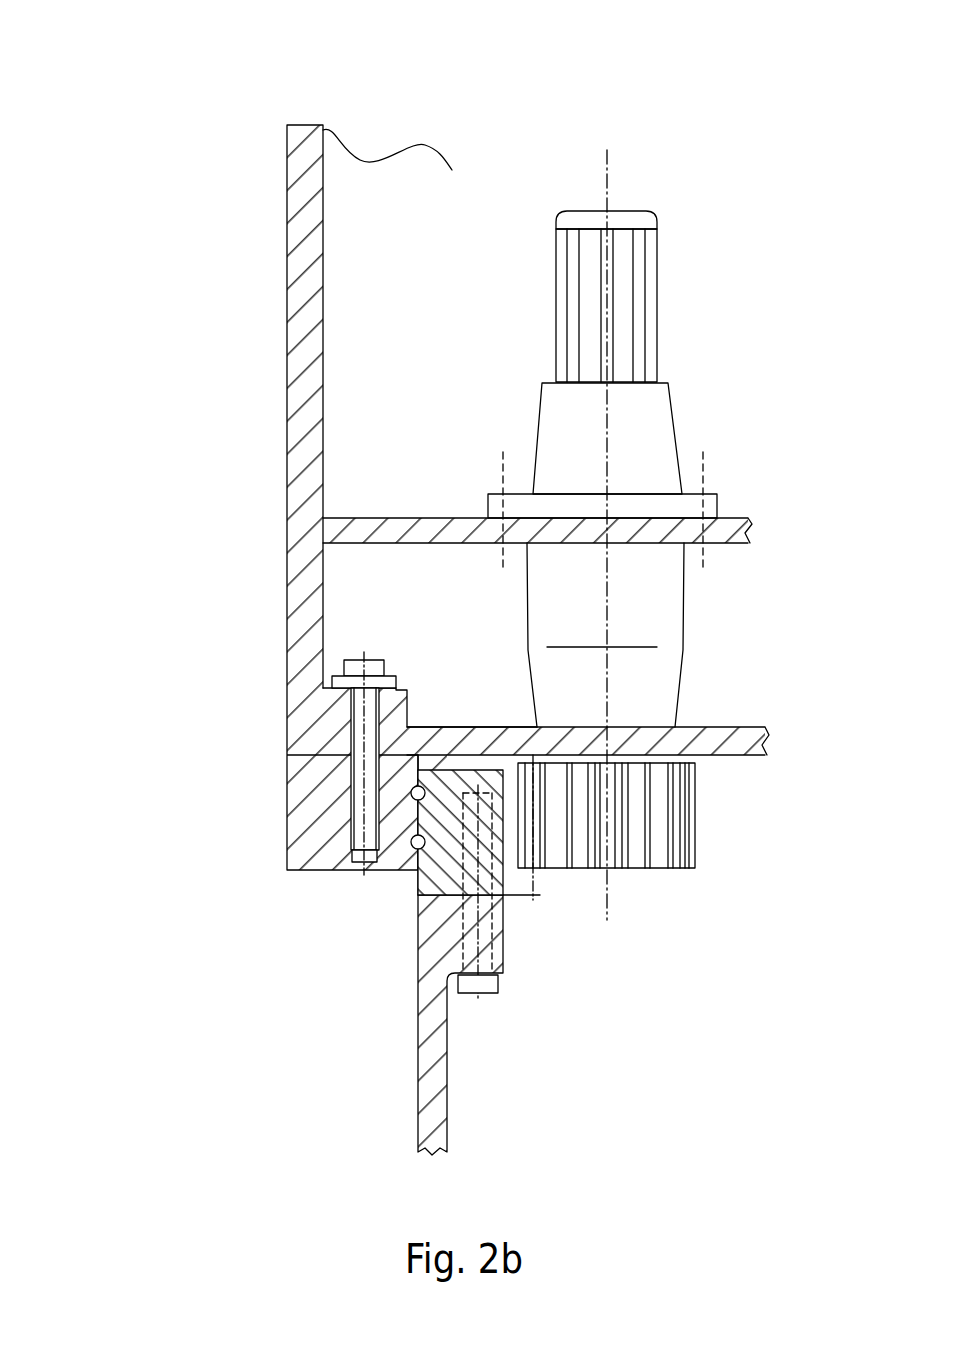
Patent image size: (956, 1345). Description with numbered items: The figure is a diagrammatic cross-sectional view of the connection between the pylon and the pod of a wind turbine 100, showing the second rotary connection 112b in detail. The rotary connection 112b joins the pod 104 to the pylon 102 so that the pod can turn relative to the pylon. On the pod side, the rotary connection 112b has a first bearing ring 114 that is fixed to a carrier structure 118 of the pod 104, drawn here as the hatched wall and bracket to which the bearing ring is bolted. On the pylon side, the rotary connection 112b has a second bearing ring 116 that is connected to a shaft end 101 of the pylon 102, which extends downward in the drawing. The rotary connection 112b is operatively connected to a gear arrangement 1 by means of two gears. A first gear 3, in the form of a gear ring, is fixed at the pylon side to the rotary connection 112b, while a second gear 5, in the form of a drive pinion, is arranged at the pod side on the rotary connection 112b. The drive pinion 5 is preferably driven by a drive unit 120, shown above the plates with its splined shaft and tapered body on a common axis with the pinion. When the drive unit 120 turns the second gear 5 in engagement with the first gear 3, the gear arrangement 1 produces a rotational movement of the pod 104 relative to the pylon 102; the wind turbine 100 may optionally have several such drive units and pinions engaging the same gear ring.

The wind turbine 100 is at (203, 118).
The pod 104 is at (237, 415).
The carrier structure 118 is at (303, 599).
The first bearing ring 114 is at (307, 809).
The second rotary connection 112b is at (388, 885).
The pylon 102 is at (232, 1038).
The shaft end 101 is at (425, 1052).
The drive unit 120 is at (672, 615).
The second gear 5 is at (695, 830).
The first gear 3 is at (522, 880).
The second bearing ring 116 is at (497, 873).
The gear arrangement 1 is at (663, 900).